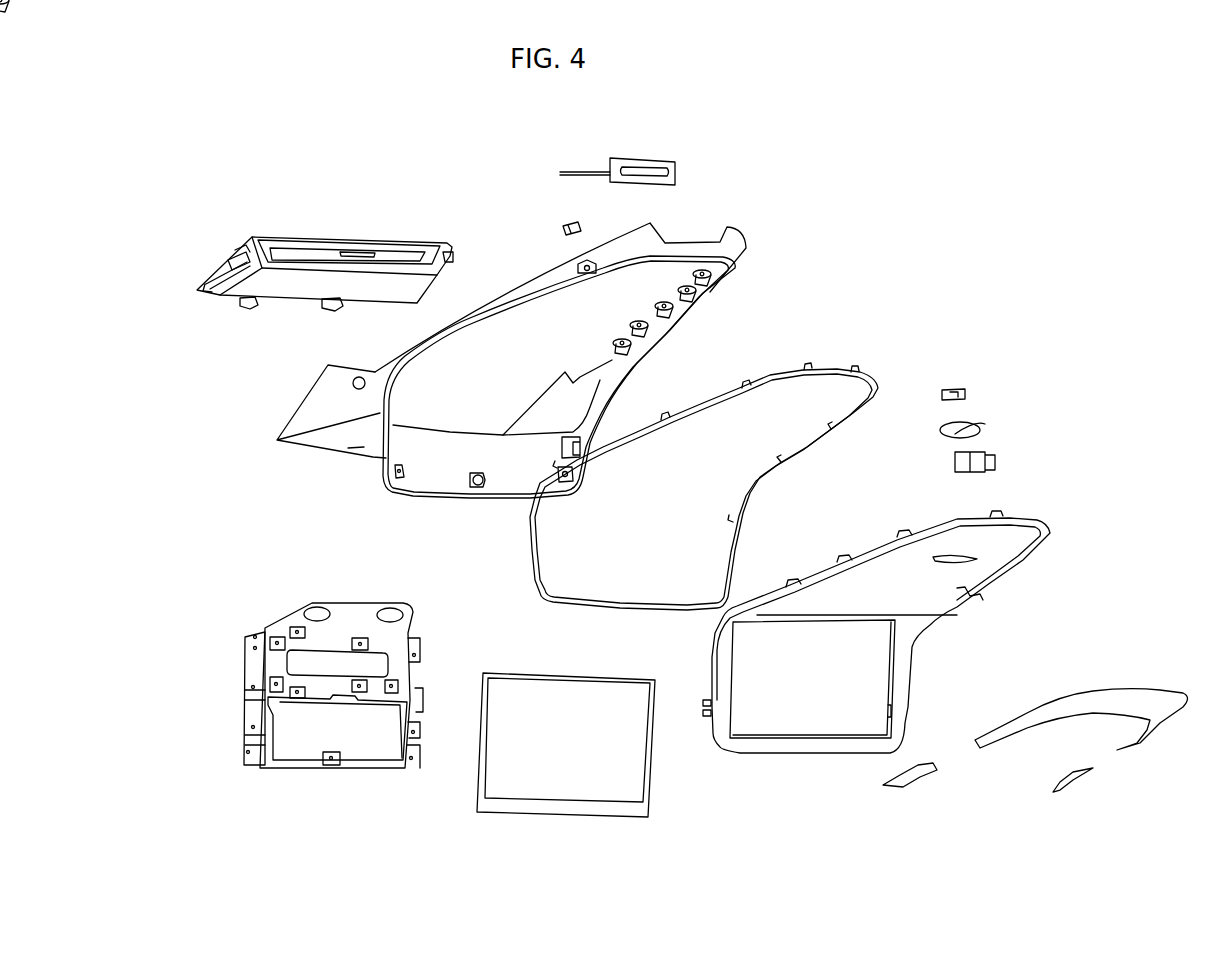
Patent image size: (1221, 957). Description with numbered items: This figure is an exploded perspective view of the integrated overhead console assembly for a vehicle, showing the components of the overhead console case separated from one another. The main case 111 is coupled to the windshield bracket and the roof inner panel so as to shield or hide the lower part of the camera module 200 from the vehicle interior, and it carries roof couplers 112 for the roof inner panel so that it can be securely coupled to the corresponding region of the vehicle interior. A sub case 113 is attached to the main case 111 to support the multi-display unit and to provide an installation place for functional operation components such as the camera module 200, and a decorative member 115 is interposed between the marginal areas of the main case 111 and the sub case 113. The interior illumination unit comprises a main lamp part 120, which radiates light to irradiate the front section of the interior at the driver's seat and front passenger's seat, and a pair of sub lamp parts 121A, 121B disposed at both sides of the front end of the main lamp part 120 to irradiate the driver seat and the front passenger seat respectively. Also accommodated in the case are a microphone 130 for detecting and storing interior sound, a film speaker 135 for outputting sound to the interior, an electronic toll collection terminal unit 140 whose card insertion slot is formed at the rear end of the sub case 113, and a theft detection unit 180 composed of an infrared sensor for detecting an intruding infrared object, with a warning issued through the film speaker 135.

The camera module 200 is at (226, 262).
The main case 111 is at (320, 403).
The roof couplers 112 is at (698, 278).
The decorative member 115 is at (808, 378).
The sub case 113 is at (1020, 530).
The electronic toll collection terminal unit 140 is at (647, 170).
The theft detection unit 180 is at (565, 225).
The microphone 130 is at (965, 393).
The film speaker 135 is at (980, 425).
The main lamp part 120 is at (1127, 703).
The sub lamp part 121A is at (920, 782).
The sub lamp part 121B is at (1073, 782).